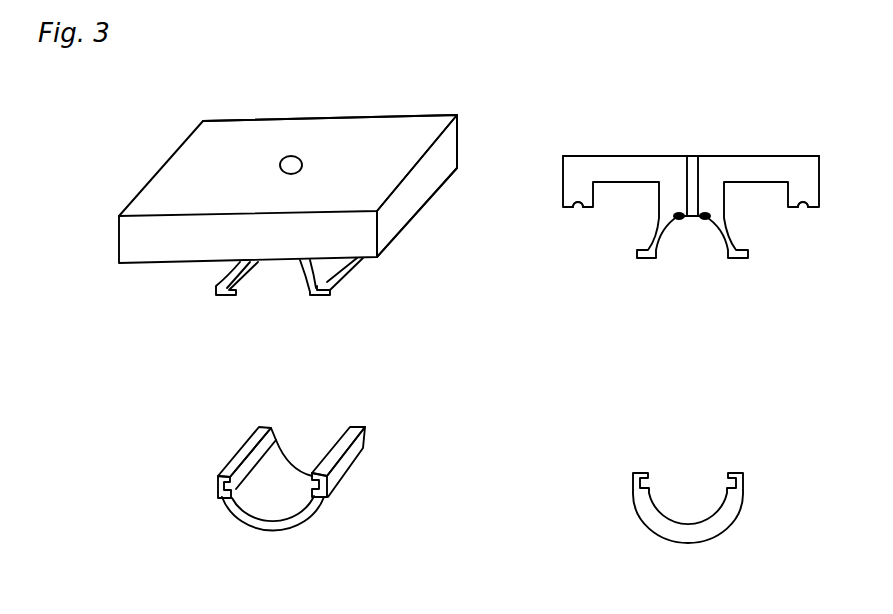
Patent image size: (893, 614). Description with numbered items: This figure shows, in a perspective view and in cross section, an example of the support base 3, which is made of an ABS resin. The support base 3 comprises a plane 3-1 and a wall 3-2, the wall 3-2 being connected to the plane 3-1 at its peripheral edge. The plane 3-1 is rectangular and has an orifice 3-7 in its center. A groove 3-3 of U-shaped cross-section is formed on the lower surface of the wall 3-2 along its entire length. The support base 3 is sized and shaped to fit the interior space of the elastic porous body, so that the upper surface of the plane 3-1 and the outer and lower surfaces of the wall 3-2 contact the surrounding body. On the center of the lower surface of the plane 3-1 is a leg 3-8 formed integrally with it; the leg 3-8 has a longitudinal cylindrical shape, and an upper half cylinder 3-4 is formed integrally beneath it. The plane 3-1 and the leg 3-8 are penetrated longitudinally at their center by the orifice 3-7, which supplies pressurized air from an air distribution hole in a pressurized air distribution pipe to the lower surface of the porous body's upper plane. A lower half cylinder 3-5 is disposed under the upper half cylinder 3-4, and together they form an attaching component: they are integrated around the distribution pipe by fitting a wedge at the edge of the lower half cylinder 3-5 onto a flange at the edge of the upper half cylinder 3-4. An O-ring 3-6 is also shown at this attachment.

The support base 3 is at (163, 168).
The plane 3-1 is at (248, 140).
The wall 3-2 is at (566, 181).
The groove 3-3 is at (803, 208).
The upper half cylinder 3-4 is at (317, 297).
The lower half cylinder 3-5 is at (353, 452).
The O-ring 3-6 is at (705, 221).
The orifice 3-7 is at (291, 157).
The leg 3-8 is at (672, 197).